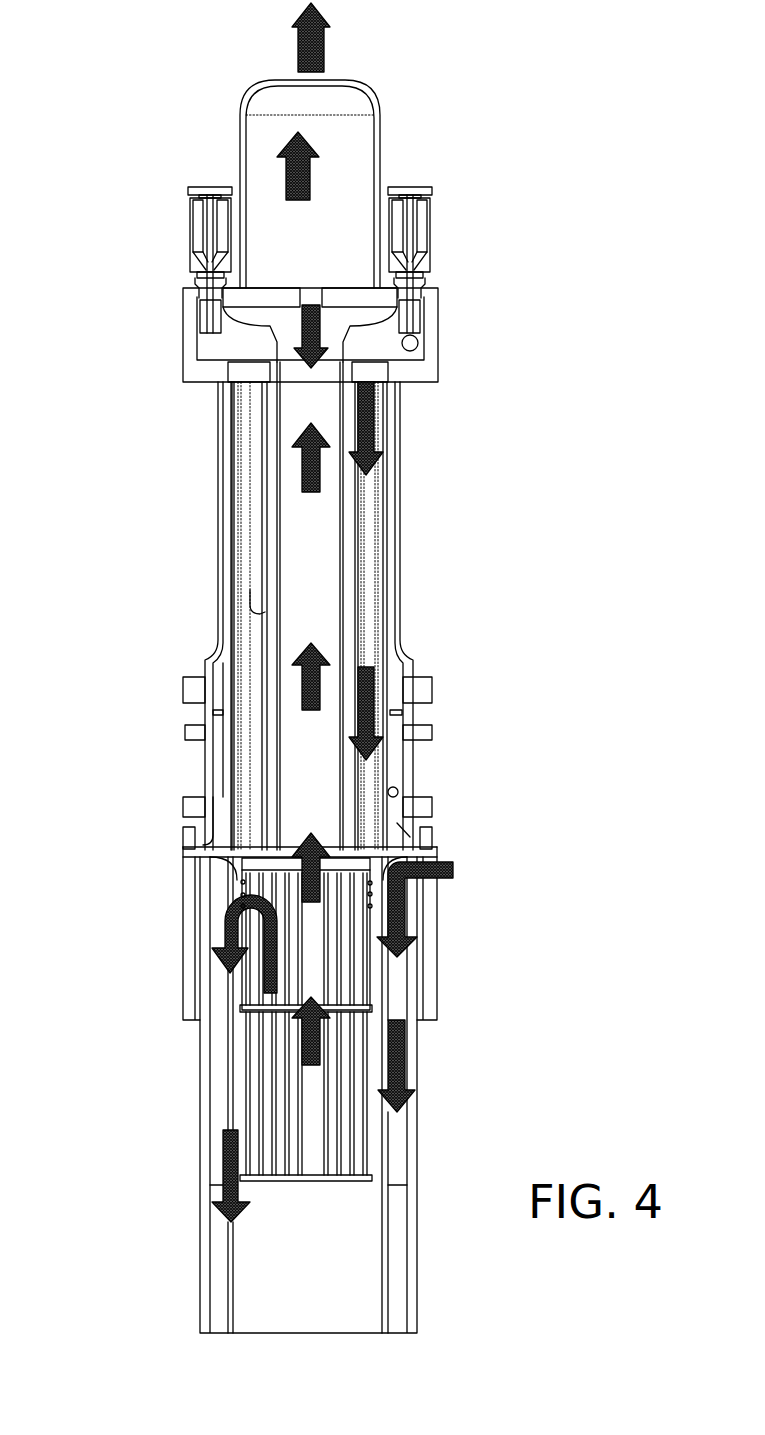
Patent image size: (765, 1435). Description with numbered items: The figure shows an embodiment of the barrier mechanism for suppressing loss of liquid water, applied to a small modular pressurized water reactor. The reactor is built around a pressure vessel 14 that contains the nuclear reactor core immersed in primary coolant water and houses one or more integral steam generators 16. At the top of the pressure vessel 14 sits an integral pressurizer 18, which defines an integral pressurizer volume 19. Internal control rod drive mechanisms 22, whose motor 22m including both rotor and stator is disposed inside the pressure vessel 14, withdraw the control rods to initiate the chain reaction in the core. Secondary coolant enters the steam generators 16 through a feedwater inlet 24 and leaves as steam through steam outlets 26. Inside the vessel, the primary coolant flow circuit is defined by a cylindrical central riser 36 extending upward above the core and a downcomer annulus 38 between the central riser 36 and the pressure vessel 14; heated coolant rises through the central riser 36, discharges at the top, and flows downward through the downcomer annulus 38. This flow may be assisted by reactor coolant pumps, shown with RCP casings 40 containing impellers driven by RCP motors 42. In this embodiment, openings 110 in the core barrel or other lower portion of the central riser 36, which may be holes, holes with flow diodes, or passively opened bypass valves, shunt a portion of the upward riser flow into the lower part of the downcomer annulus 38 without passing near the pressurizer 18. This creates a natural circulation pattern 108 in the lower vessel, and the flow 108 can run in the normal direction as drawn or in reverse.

The pressure vessel 14 is at (222, 533).
The integral steam generators 16 is at (243, 470).
The integral pressurizer 18 is at (240, 130).
The integral pressurizer volume 19 is at (277, 172).
The control rod drive mechanisms 22 is at (257, 882).
The CRDM motor 22m is at (270, 1092).
The feedwater inlet 24 is at (200, 735).
The steam outlets 26 is at (198, 692).
The central riser 36 is at (292, 782).
The downcomer annulus 38 is at (248, 612).
The RCP casings 40 is at (205, 318).
The RCP motors 42 is at (210, 225).
The circulation pattern 108 is at (232, 940).
The openings 110 is at (243, 882).